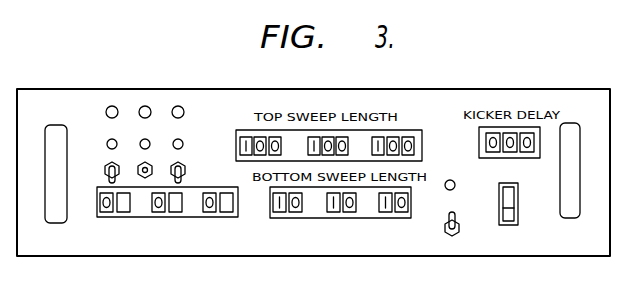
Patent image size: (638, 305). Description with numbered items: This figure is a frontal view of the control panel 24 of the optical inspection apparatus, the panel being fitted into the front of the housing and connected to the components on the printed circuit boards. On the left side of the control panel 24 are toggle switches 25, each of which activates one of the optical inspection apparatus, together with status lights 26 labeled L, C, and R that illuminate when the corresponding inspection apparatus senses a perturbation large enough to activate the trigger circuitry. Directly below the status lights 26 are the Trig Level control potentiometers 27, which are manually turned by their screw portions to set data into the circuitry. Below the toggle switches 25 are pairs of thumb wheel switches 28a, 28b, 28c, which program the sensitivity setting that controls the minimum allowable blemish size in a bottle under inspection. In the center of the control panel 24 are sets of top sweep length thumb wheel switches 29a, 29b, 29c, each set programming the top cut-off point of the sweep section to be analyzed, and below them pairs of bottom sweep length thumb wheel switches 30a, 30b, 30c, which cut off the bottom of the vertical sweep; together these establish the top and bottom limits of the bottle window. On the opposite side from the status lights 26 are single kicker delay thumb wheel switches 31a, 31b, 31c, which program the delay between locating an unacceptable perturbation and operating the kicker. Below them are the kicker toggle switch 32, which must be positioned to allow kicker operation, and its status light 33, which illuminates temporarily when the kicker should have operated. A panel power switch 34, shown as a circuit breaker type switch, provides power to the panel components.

The control panel 24 is at (474, 72).
The toggle switches 25 is at (105, 171).
The status lights 26 is at (117, 107).
The control potentiometers 27 is at (178, 140).
The thumb wheel switches 28a is at (116, 218).
The thumb wheel switches 28b is at (168, 218).
The thumb wheel switches 28c is at (223, 218).
The thumb wheel switches 29a is at (250, 130).
The thumb wheel switches 29b is at (334, 130).
The thumb wheel switches 29c is at (404, 130).
The thumb wheel switches 30a is at (286, 218).
The thumb wheel switches 30b is at (342, 218).
The thumb wheel switches 30c is at (395, 218).
The thumb wheel switch 31a is at (486, 144).
The thumb wheel switch 31b is at (510, 153).
The thumb wheel switch 31c is at (527, 153).
The kicker toggle switch 32 is at (445, 222).
The status light 33 is at (461, 166).
The panel power switch 34 is at (517, 210).